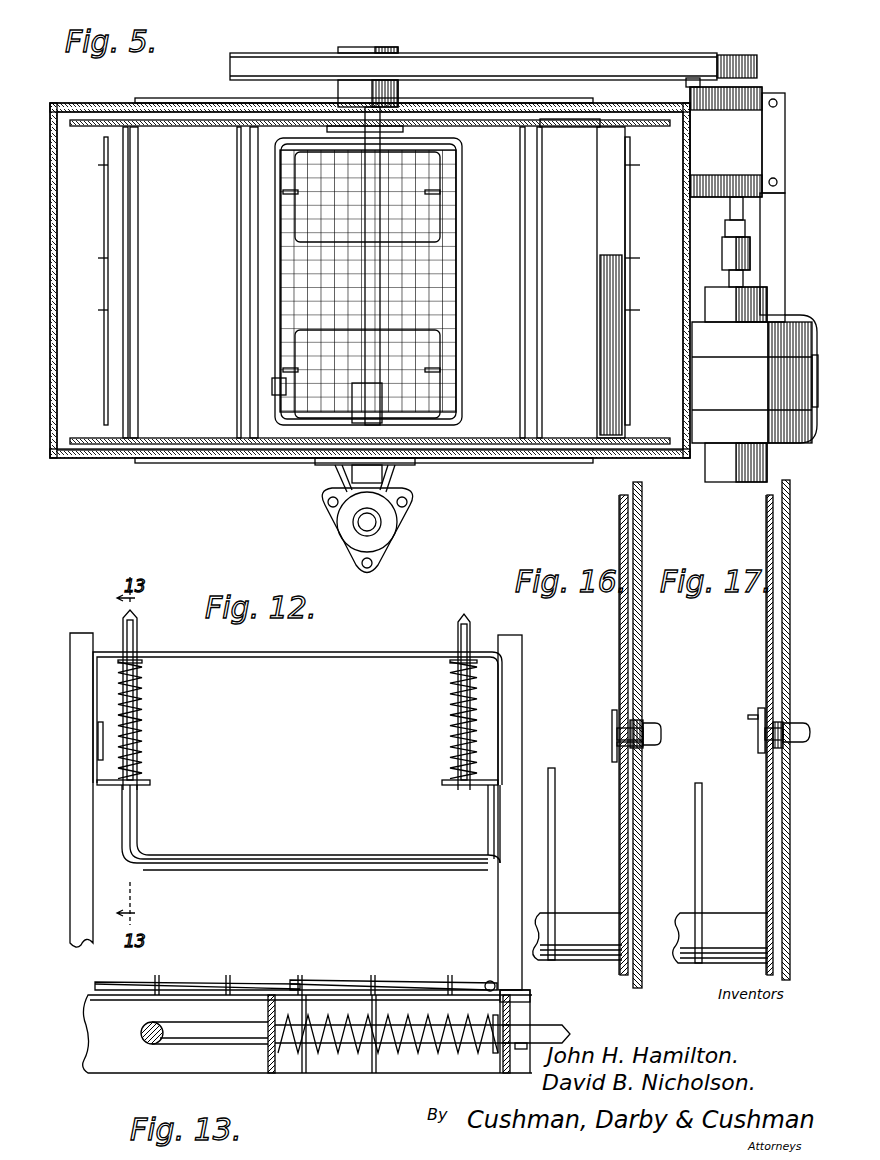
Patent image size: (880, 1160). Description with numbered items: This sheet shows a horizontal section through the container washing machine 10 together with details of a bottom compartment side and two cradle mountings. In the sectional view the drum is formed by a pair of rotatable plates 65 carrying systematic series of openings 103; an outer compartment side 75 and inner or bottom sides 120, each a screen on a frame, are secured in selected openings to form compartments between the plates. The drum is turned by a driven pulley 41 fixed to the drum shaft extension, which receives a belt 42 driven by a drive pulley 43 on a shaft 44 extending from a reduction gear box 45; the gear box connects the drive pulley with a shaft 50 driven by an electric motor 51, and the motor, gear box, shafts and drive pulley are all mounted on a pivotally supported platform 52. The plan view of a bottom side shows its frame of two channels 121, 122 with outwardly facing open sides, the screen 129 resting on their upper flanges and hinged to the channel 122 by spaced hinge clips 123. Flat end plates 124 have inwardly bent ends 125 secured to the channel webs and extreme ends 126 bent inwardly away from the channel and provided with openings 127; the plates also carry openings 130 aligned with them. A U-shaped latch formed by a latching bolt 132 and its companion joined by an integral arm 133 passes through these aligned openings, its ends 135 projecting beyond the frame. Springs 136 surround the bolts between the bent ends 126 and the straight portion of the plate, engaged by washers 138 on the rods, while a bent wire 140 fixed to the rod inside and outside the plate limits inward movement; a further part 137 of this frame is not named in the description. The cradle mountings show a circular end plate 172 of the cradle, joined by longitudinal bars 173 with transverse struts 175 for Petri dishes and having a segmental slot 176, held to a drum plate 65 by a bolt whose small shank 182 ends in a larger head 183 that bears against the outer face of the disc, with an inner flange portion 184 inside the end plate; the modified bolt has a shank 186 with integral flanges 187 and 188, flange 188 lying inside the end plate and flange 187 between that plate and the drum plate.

In FIG. 5, the housing 10 is at (262, 462).
In FIG. 5, the driven pulley 41 is at (490, 53).
In FIG. 5, the belt 42 is at (591, 57).
In FIG. 5, the drive pulley 43 is at (735, 55).
In FIG. 5, the shaft 44 is at (688, 80).
In FIG. 5, the reduction gear box 45 is at (752, 146).
In FIG. 5, the shaft 50 is at (744, 212).
In FIG. 5, the electric motor 51 is at (773, 337).
In FIG. 5, the supporting platform 52 is at (775, 265).
In FIG. 5, the rotatable plates 65 is at (205, 127).
In FIG. 16, the rotatable plates 65 is at (643, 560).
In FIG. 17, the rotatable plates 65 is at (782, 636).
In FIG. 5, the outer compartment side 75 is at (115, 231).
In FIG. 5, the openings 103 is at (566, 128).
In FIG. 16, the openings 103 is at (640, 728).
In FIG. 5, the inner or bottom sides 120 is at (248, 302).
In FIG. 12, the channel 121 is at (512, 660).
In FIG. 12, the channel 122 is at (92, 612).
In FIG. 13, the channel 122 is at (307, 1034).
In FIG. 12, the hinge clips 123 is at (100, 745).
In FIG. 13, the hinge clips 123 is at (347, 982).
In FIG. 5, the flat plates 124 is at (272, 389).
In FIG. 12, the flat plates 124 is at (369, 656).
In FIG. 12, the inwardly bent ends 125 is at (488, 706).
In FIG. 12, the inwardly bent extreme ends 126 is at (100, 790).
In FIG. 13, the inwardly bent extreme ends 126 is at (283, 1075).
In FIG. 16, the inwardly bent extreme ends 126 is at (541, 756).
In FIG. 13, the openings 127 is at (267, 1045).
In FIG. 13, the screen 129 is at (418, 982).
In FIG. 13, the openings 130 is at (558, 1031).
In FIG. 12, the latching bolt 132 is at (122, 840).
In FIG. 13, the latching bolt 132 is at (188, 1025).
In FIG. 12, the integral arm 133 is at (295, 868).
In FIG. 13, the integral arm 133 is at (150, 1046).
In FIG. 12, the ends 135 is at (137, 625).
In FIG. 13, the ends 135 is at (533, 1037).
In FIG. 12, the springs 136 is at (472, 758).
In FIG. 13, the springs 136 is at (404, 1053).
In FIG. 16, the springs 136 is at (544, 739).
In FIG. 12, the bar 137 is at (388, 828).
In FIG. 13, the washers 138 is at (493, 1053).
In FIG. 13, the bent wire 140 is at (517, 995).
In FIG. 16, the circular end plates 172 is at (629, 643).
In FIG. 17, the circular end plates 172 is at (773, 580).
In FIG. 16, the longitudinally extending bars 173 is at (582, 924).
In FIG. 17, the longitudinally extending bars 173 is at (720, 938).
In FIG. 16, the transverse struts 175 is at (554, 870).
In FIG. 17, the transverse struts 175 is at (698, 873).
In FIG. 16, the segmental slot 176 is at (622, 815).
In FIG. 17, the segmental slot 176 is at (767, 790).
In FIG. 16, the shank 182 is at (613, 750).
In FIG. 16, the head 183 is at (661, 735).
In FIG. 16, the inner flange portion 184 is at (628, 737).
In FIG. 17, the shank 186 is at (760, 748).
In FIG. 17, the flange 187 is at (770, 737).
In FIG. 17, the flange 188 is at (752, 716).